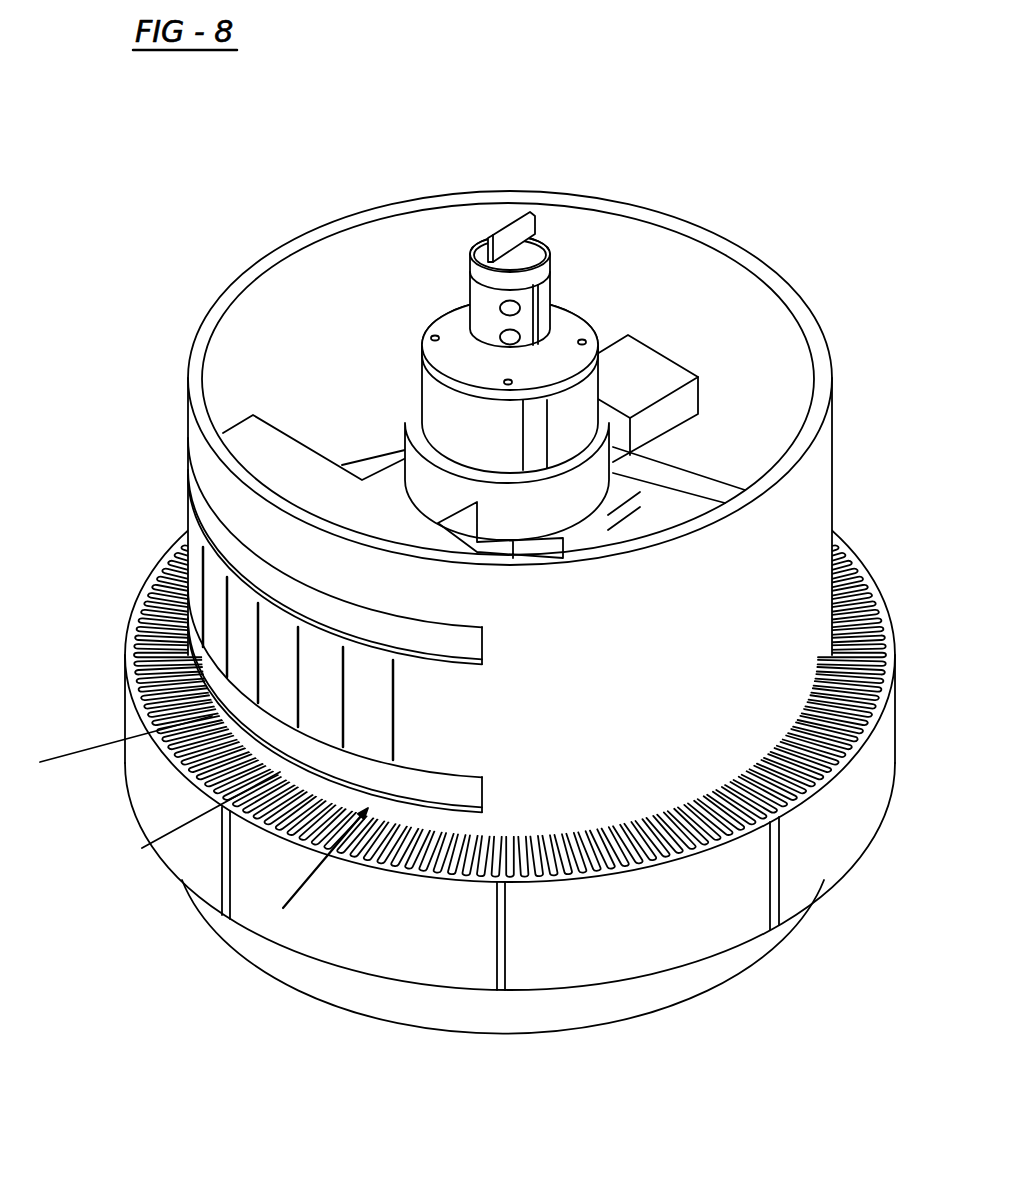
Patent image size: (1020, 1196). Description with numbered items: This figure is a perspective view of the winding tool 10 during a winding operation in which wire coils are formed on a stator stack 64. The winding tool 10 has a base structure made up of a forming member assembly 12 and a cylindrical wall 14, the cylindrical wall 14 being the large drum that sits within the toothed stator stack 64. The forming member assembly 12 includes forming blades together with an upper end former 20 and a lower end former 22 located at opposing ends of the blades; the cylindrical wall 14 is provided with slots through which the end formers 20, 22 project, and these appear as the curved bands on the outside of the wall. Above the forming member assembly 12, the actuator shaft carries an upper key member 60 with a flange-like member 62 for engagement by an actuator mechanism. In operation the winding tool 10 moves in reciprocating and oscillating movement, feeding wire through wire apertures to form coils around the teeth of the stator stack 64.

The winding tool 10 is at (718, 204).
The forming member assembly 12 is at (399, 410).
The cylindrical wall 14 is at (767, 276).
The upper end former 20 is at (483, 651).
The lower end former 22 is at (483, 797).
The upper key member 60 is at (533, 250).
The flange-like member 62 is at (491, 235).
The stator stack 64 is at (877, 598).